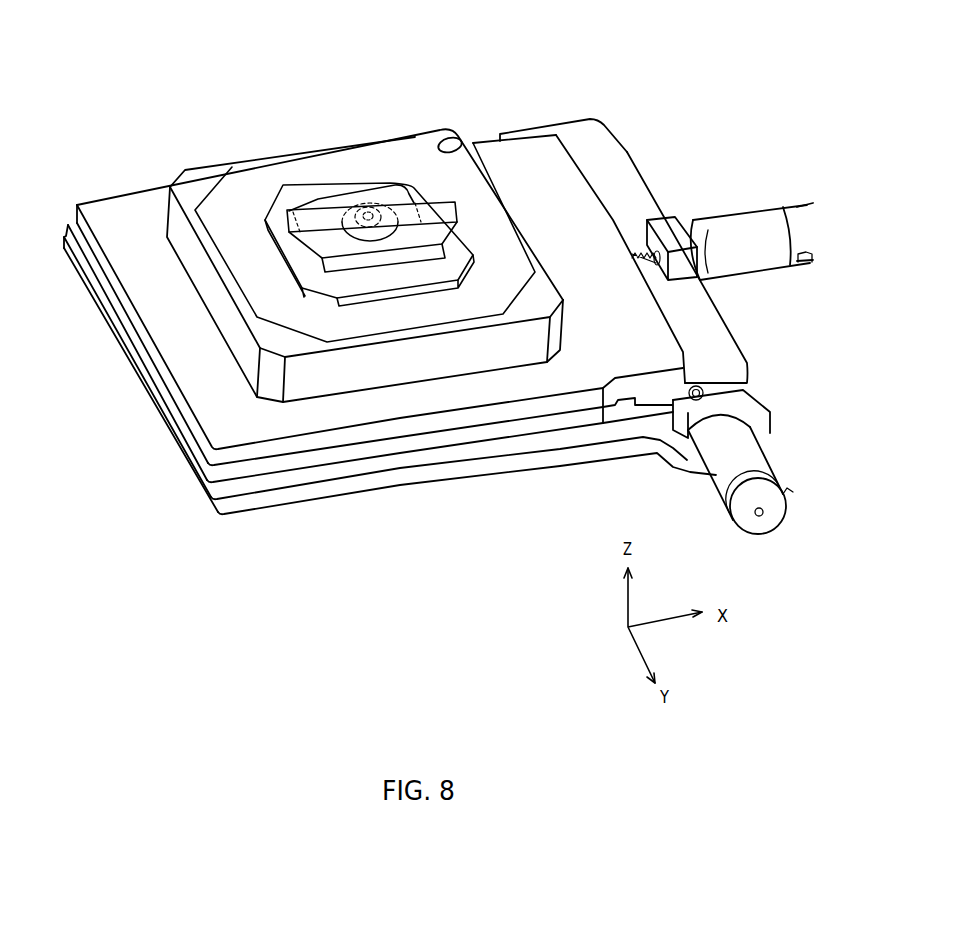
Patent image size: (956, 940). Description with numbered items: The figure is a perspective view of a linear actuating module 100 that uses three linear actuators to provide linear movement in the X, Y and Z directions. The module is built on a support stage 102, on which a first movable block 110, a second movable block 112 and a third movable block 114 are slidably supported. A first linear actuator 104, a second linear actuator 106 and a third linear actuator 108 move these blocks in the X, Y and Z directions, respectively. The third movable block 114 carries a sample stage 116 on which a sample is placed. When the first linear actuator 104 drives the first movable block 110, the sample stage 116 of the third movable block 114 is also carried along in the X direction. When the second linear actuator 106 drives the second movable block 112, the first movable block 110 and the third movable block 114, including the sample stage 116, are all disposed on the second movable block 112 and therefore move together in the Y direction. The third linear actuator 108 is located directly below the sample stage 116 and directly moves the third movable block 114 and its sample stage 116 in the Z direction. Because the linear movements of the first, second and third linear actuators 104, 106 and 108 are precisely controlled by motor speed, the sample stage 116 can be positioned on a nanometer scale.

The linear actuating module 100 is at (166, 106).
The support stage 102 is at (486, 466).
The first linear actuator 104 is at (737, 217).
The second linear actuator 106 is at (723, 477).
The third linear actuator 108 is at (368, 212).
The first movable block 110 is at (537, 153).
The second movable block 112 is at (727, 353).
The third movable block 114 is at (368, 155).
The sample stage 116 is at (420, 207).